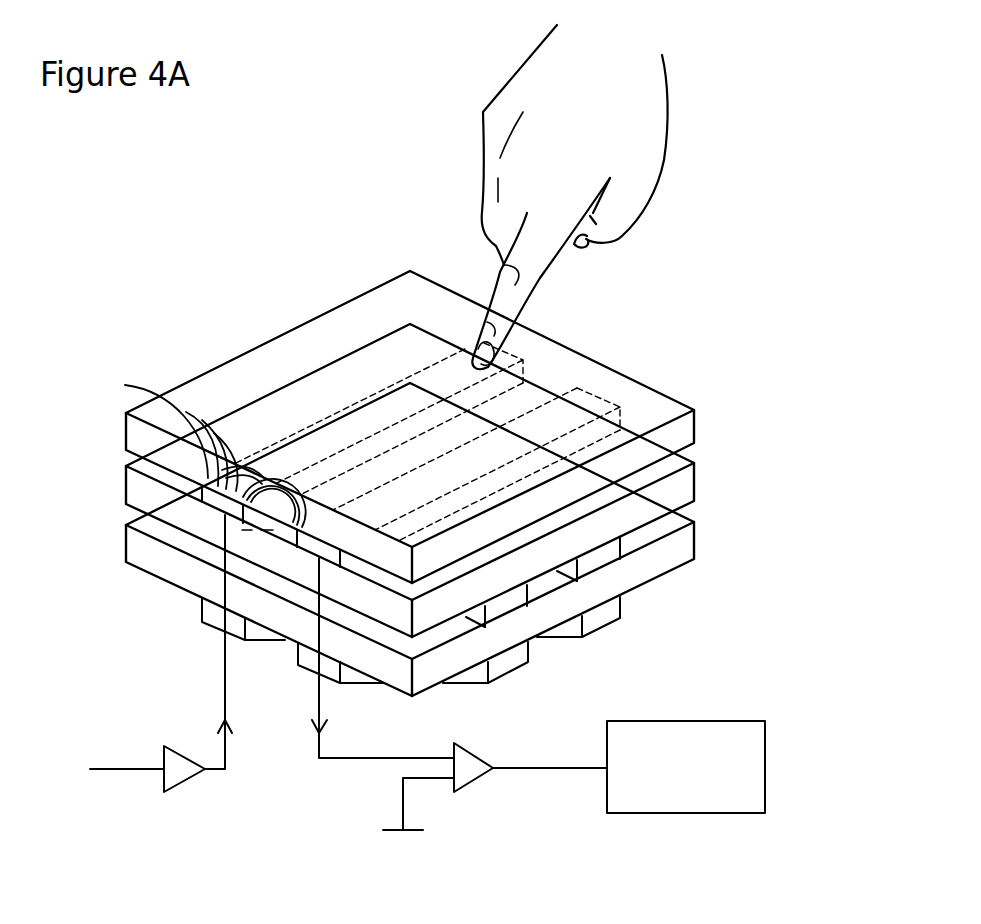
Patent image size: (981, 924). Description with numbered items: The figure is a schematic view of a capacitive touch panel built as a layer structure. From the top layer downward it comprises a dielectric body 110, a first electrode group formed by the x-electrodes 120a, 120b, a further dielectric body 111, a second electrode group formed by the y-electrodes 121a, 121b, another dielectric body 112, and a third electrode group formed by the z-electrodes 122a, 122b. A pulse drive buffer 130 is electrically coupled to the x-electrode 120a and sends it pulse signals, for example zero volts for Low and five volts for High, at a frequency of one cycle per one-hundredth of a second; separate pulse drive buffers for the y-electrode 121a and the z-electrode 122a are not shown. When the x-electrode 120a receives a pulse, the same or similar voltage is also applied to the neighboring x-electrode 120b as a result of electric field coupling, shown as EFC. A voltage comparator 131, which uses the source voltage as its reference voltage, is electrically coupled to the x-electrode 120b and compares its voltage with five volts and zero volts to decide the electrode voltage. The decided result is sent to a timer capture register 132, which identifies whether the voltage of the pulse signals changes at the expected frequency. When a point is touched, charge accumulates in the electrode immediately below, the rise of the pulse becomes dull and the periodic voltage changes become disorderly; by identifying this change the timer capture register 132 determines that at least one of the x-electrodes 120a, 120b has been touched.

The dielectric body 110 is at (650, 402).
The dielectric body 111 is at (680, 466).
The dielectric body 112 is at (680, 523).
The x-electrode 120a is at (223, 502).
The x-electrode 120b is at (318, 553).
The y-electrode 121a is at (602, 560).
The y-electrode 121b is at (508, 605).
The z-electrode 122a is at (600, 615).
The z-electrode 122b is at (508, 663).
The pulse drive buffer 130 is at (170, 760).
The voltage comparator 131 is at (470, 758).
The timer capture register 132 is at (738, 719).
The electric field coupling EFC is at (272, 492).